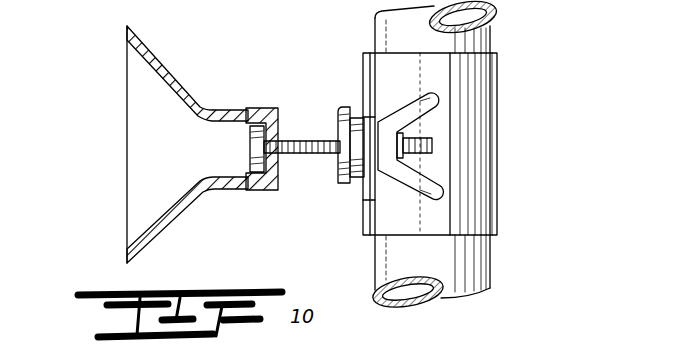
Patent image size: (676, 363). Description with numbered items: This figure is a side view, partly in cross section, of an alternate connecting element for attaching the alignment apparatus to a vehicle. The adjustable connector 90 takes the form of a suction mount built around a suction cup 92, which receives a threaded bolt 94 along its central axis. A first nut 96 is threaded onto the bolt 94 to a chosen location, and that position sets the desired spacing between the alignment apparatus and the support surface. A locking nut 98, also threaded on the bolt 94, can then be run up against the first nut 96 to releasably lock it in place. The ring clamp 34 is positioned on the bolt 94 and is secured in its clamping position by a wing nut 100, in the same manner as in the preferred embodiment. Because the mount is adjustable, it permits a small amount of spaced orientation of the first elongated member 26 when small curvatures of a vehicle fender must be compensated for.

The first elongated member 26 is at (484, 38).
The ring clamp 34 is at (486, 86).
The adjustable connector 90 is at (116, 100).
The suction cup 92 is at (138, 142).
The threaded bolt 94 is at (311, 140).
The first nut 96 is at (352, 176).
The locking nut 98 is at (337, 170).
The wing nut 100 is at (403, 108).